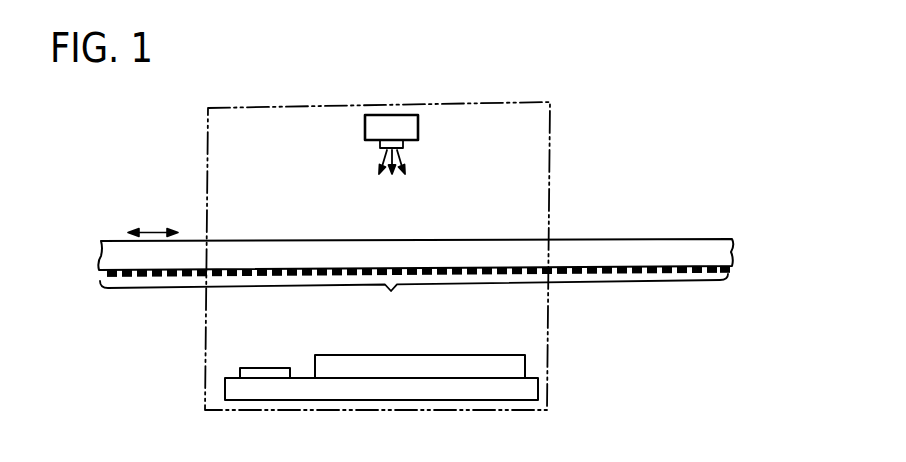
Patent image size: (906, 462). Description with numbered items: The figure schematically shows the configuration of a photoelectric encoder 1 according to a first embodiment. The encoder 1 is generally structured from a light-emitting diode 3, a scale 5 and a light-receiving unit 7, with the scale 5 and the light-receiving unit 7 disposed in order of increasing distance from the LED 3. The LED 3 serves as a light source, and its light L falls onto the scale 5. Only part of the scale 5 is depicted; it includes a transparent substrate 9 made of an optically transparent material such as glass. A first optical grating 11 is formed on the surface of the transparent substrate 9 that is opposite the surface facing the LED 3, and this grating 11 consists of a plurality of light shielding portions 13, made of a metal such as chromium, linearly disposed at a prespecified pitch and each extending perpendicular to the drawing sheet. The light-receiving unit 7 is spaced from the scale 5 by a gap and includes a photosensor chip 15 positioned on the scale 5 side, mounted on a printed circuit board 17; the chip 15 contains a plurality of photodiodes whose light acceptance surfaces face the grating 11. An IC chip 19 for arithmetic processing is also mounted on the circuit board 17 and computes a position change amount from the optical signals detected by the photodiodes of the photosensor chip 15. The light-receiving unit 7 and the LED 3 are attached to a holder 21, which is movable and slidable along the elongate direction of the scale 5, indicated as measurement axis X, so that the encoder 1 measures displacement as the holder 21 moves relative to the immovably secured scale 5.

The photoelectric encoder 1 is at (668, 136).
The light-emitting diode 3 is at (420, 125).
The scale 5 is at (759, 232).
The light-receiving unit 7 is at (540, 351).
The transparent substrate 9 is at (733, 250).
The first optical grating 11 is at (414, 297).
The light shielding portions 13 is at (727, 271).
The photosensor chip 15 is at (527, 368).
The printed circuit board 17 is at (540, 388).
The IC chip 19 is at (238, 372).
The holder 21 is at (207, 135).
The light L is at (376, 162).
The measurement axis X is at (155, 231).